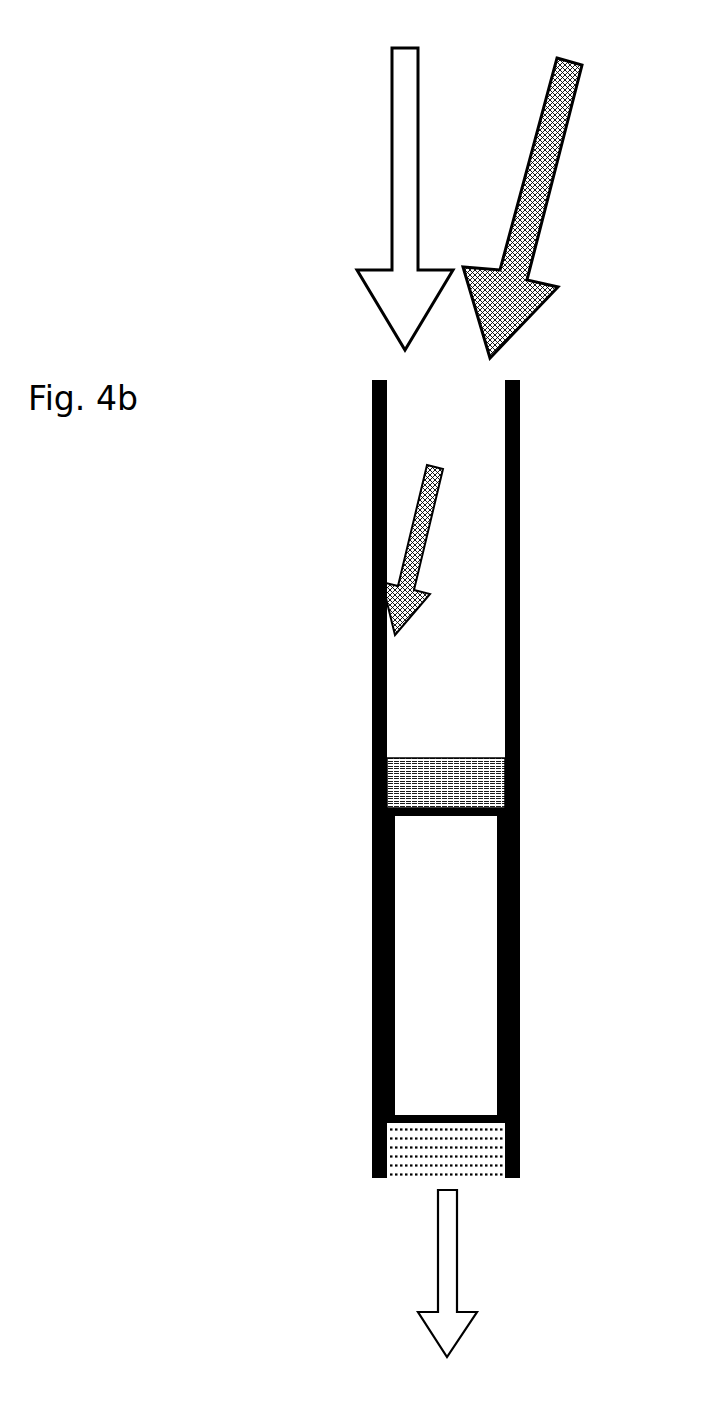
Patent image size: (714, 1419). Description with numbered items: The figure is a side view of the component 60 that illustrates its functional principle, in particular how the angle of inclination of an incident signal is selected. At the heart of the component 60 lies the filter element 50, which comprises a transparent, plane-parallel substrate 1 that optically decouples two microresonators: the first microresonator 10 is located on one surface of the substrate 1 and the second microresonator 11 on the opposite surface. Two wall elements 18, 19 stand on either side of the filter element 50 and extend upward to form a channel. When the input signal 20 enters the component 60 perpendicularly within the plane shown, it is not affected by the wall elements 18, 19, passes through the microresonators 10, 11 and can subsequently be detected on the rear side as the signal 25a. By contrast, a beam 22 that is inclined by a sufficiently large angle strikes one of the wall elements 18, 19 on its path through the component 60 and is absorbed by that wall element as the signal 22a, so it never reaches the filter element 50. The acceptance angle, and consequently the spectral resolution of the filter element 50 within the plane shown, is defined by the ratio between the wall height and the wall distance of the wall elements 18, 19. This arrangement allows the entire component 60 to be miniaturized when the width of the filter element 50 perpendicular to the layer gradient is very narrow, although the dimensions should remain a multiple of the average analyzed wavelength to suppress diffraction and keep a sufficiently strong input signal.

The substrate 1 is at (396, 965).
The first microresonator 10 is at (496, 780).
The second microresonator 11 is at (395, 1189).
The wall element 18 is at (326, 779).
The wall element 19 is at (555, 779).
The input signal 20 is at (374, 199).
The incident signal 22 is at (553, 208).
The absorbed signal 22a is at (352, 566).
The signal 25a is at (487, 1284).
The filter element 50 is at (492, 1185).
The component 60 is at (607, 510).